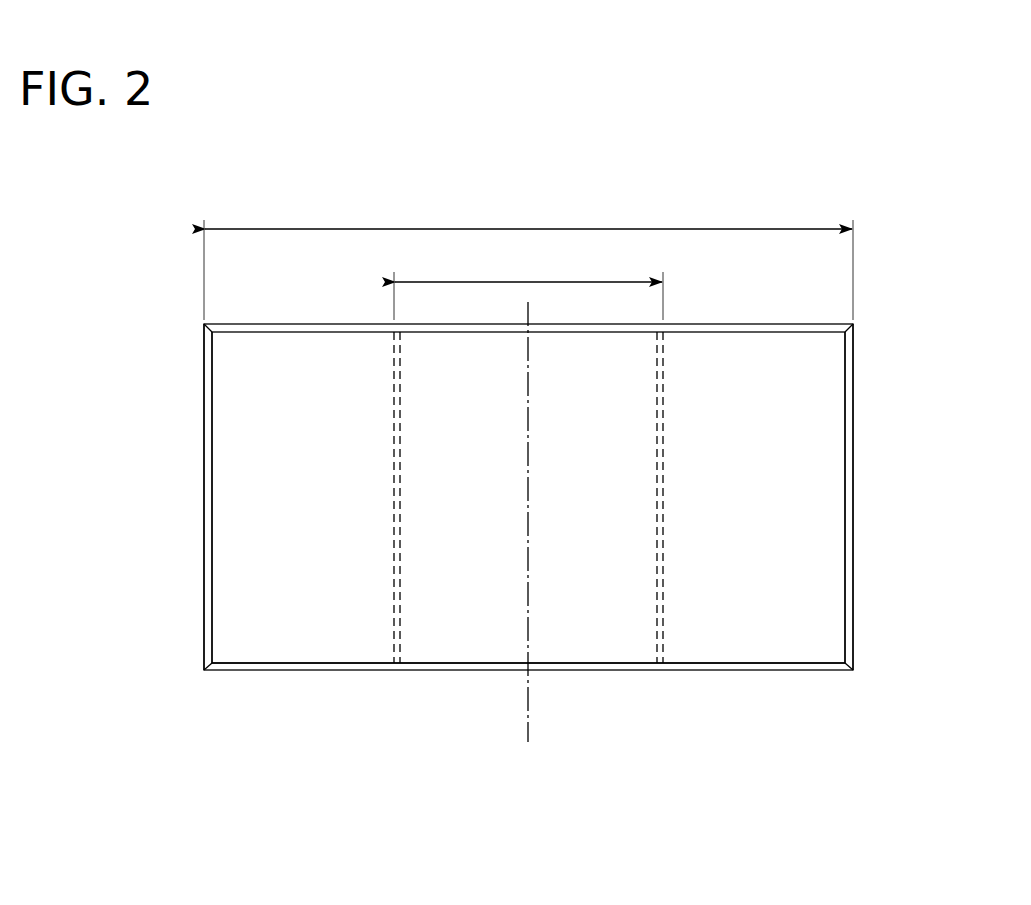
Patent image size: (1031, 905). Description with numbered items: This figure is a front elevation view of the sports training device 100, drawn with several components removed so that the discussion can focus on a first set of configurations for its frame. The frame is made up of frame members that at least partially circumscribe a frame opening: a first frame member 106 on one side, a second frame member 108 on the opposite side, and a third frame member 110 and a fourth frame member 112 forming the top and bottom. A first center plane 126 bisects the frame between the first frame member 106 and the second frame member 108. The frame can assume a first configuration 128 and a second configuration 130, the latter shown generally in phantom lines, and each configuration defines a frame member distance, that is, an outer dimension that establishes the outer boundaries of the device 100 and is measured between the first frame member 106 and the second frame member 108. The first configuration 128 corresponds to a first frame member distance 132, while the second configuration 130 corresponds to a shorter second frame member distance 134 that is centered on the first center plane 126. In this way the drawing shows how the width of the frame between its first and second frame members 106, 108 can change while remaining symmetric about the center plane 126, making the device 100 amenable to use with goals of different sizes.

The sports training device 100 is at (934, 214).
The first frame member 106 is at (208, 485).
The second frame member 108 is at (850, 485).
The third frame member 110 is at (311, 324).
The fourth frame member 112 is at (358, 672).
The first center plane 126 is at (531, 712).
The first configuration 128 is at (853, 820).
The second configuration 130 is at (663, 771).
The first frame member distance 132 is at (565, 229).
The second frame member distance 134 is at (563, 282).